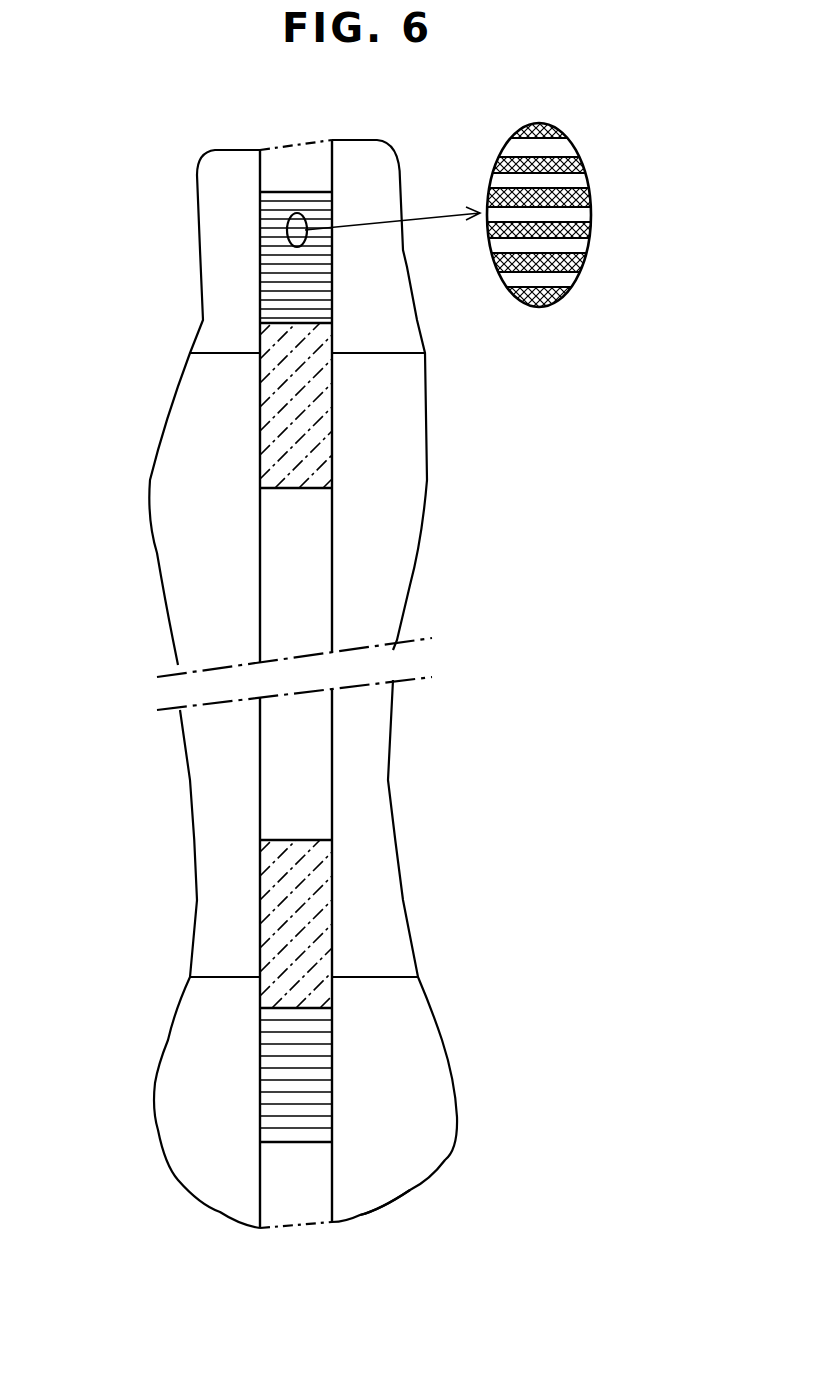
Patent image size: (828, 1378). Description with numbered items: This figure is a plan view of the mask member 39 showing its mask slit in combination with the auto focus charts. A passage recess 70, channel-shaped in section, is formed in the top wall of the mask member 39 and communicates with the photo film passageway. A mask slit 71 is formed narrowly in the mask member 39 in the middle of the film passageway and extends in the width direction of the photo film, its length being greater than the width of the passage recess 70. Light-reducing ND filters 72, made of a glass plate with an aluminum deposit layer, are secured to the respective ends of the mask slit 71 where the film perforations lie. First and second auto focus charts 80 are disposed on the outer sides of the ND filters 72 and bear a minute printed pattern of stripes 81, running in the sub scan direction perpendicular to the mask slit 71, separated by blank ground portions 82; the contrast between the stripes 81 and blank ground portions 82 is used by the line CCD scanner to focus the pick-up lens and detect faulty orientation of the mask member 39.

The passage recess 70 is at (175, 560).
The mask slit 71 is at (318, 573).
The ND filters 72 is at (322, 417).
The auto focus charts 80 is at (247, 274).
The stripes 81 is at (577, 182).
The blank ground portions 82 is at (590, 232).
The mask member 39 is at (410, 1190).